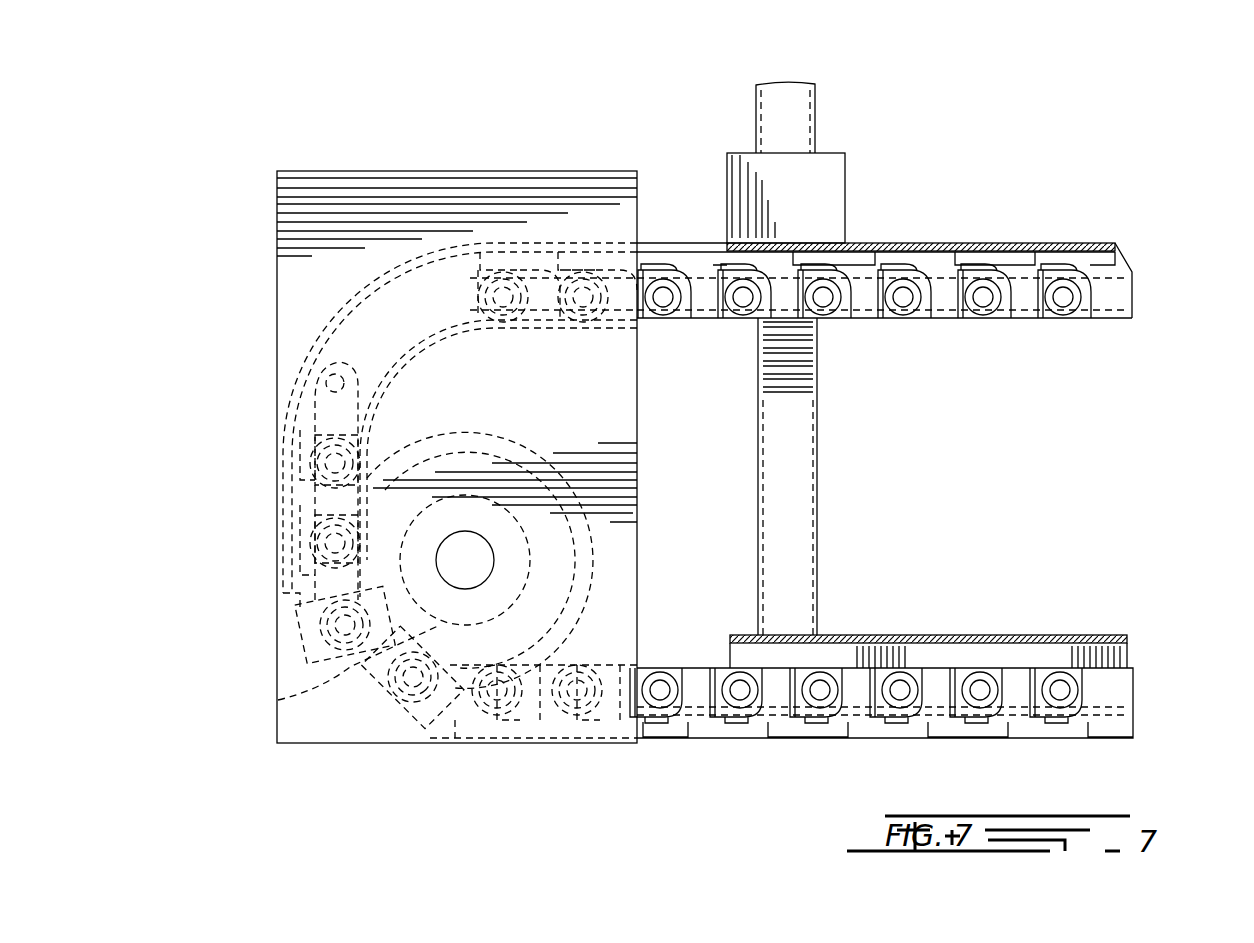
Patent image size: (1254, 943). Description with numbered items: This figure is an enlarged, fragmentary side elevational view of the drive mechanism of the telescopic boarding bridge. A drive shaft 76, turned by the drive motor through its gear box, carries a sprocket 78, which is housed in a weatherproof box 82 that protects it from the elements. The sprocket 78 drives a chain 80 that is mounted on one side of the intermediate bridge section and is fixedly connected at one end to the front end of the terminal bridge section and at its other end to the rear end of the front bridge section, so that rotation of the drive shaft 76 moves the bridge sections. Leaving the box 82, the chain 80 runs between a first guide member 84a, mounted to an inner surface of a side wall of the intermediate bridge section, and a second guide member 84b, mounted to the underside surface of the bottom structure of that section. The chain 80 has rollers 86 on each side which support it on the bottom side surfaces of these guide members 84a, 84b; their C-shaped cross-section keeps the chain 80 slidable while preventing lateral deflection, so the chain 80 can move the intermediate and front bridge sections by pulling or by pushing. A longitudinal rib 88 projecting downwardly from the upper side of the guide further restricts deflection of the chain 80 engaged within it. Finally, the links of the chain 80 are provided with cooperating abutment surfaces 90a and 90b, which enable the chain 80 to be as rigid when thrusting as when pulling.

The drive shaft 76 is at (470, 563).
The sprocket 78 is at (537, 457).
The chain 80 is at (698, 710).
The weatherproof box 82 is at (350, 208).
The first guide member 84a is at (930, 243).
The second guide member 84b is at (985, 635).
The roller 86 is at (905, 300).
The longitudinal rib 88 is at (1035, 655).
The abutment surface 90a is at (278, 600).
The abutment surface 90b is at (278, 700).